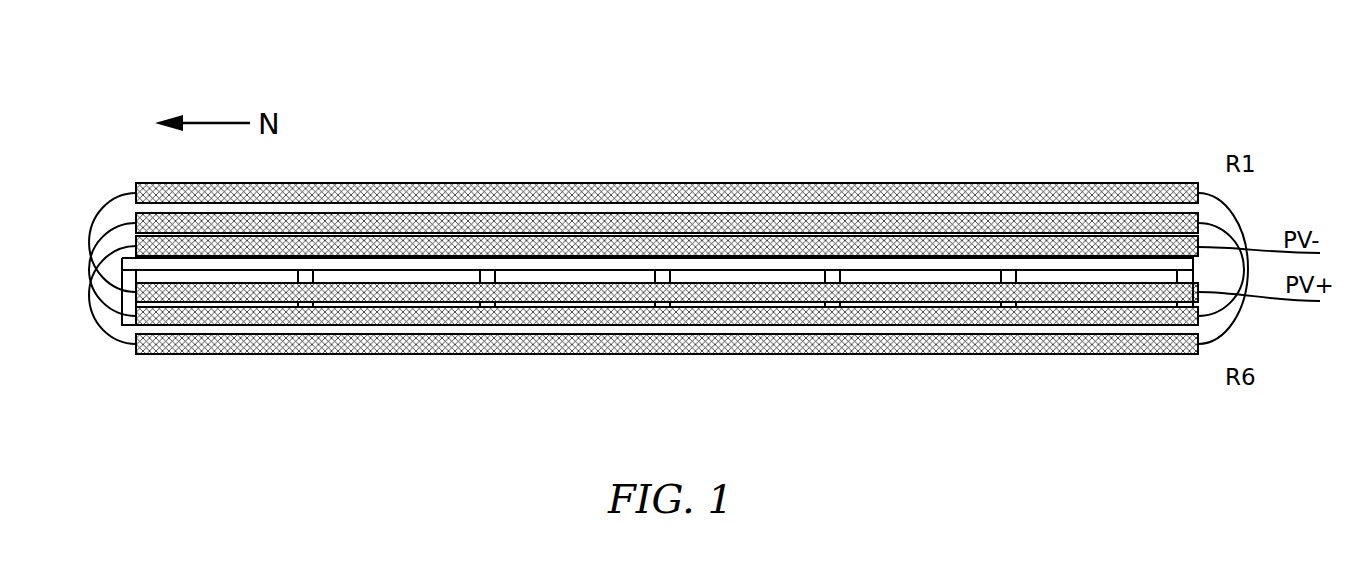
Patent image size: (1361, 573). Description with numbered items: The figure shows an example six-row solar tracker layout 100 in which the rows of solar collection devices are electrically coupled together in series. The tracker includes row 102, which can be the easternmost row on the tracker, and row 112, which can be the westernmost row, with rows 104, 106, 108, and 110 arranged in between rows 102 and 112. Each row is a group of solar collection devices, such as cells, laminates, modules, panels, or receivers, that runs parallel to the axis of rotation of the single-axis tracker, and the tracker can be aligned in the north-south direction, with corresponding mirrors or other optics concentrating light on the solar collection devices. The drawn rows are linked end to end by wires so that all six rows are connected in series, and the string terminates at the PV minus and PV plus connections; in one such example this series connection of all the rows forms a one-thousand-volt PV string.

The photovoltaic module assembly 100 is at (638, 66).
The row 102 is at (552, 192).
The row 104 is at (628, 218).
The row 106 is at (717, 243).
The row 108 is at (520, 293).
The row 110 is at (618, 317).
The row 112 is at (727, 342).